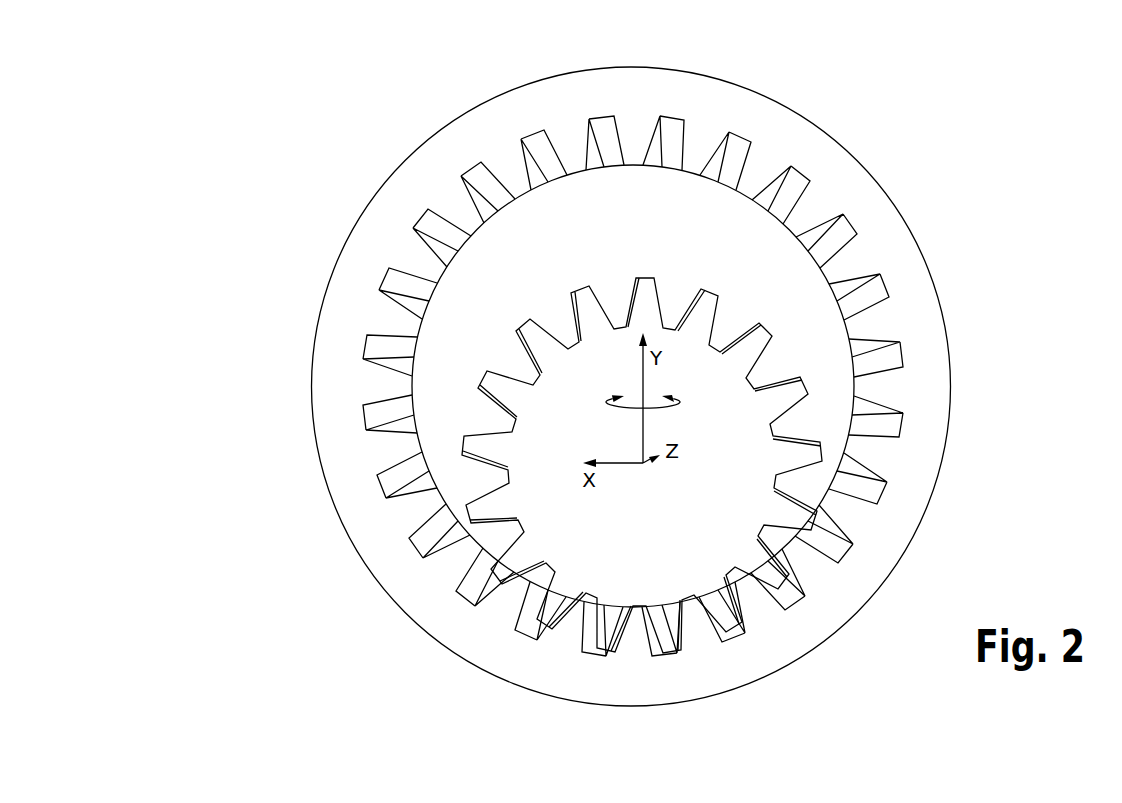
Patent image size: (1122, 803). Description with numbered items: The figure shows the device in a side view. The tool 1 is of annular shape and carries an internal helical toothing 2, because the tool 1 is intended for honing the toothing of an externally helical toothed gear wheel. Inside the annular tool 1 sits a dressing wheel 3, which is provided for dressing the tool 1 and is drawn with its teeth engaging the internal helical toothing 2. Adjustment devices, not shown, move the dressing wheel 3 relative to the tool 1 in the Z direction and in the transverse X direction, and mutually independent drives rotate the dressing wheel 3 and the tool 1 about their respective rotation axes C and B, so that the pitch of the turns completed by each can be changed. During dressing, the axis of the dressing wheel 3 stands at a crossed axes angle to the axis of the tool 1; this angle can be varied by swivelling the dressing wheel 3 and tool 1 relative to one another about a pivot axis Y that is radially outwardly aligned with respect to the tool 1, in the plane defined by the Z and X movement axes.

The tool 1 is at (882, 240).
The internal helical toothing 2 is at (507, 599).
The dressing wheel 3 is at (718, 420).